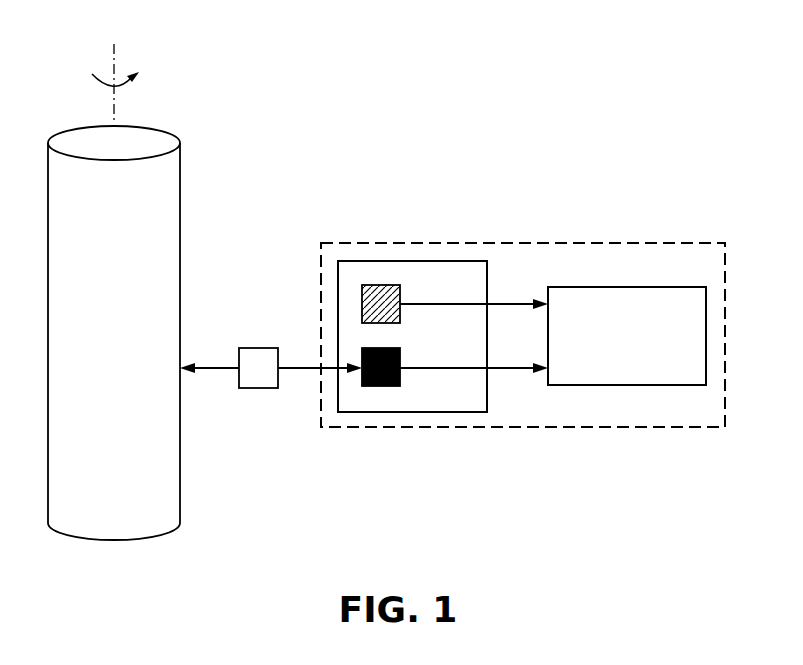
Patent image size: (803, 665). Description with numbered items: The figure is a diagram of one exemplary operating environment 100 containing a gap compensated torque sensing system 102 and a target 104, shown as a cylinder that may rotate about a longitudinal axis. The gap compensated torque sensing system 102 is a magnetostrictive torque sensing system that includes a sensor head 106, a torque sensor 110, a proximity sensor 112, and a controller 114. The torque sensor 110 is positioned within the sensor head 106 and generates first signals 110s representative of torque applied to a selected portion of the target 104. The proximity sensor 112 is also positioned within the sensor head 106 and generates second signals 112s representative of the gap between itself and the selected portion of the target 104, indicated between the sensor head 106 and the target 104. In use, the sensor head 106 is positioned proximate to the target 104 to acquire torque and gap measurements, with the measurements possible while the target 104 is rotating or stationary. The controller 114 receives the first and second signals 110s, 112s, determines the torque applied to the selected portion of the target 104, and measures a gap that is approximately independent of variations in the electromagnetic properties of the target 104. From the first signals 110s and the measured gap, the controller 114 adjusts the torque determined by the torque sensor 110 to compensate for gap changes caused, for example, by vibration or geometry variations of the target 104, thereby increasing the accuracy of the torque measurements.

The operating environment 100 is at (478, 102).
The gap compensated torque sensing system 102 is at (462, 243).
The target 104 is at (133, 349).
The sensor head 106 is at (463, 349).
The torque sensor 110 is at (378, 386).
The first signals 110s is at (512, 372).
The proximity sensor 112 is at (378, 285).
The second signals 112s is at (507, 300).
The controller 114 is at (645, 350).